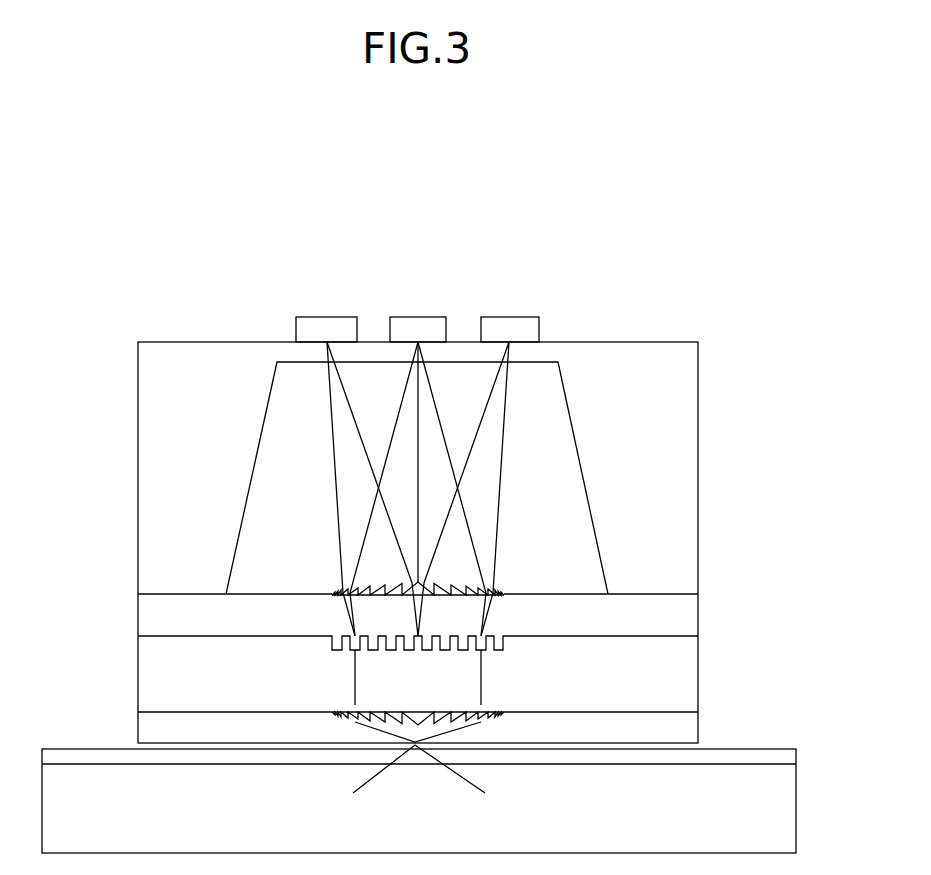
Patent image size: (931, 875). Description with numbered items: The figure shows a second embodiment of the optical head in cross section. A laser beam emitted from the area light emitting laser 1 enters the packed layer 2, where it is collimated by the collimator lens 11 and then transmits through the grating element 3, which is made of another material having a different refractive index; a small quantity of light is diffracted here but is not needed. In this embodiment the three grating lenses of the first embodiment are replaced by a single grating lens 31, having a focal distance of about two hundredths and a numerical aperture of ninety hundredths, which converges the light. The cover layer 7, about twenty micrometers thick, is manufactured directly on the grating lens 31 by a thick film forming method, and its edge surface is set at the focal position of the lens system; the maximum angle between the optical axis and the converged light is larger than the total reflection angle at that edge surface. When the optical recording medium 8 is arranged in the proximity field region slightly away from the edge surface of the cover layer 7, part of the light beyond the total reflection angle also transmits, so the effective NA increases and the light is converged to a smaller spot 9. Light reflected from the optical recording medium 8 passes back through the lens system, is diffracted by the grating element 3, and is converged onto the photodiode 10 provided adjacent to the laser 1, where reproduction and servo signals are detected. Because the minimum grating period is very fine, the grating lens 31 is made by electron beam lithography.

The area light emitting laser 1 is at (418, 317).
The photodiode 10 is at (327, 317).
The packed layer 2 is at (555, 412).
The collimator lens 11 is at (503, 591).
The grating element 3 is at (503, 636).
The grating lens 31 is at (503, 712).
The cover layer 7 is at (685, 731).
The optical recording medium 8 is at (785, 809).
The spot 9 is at (418, 765).